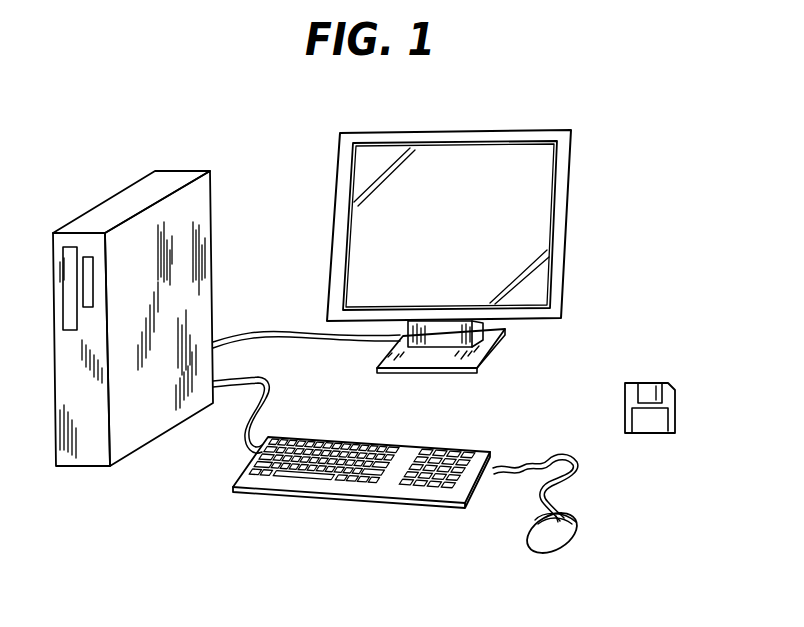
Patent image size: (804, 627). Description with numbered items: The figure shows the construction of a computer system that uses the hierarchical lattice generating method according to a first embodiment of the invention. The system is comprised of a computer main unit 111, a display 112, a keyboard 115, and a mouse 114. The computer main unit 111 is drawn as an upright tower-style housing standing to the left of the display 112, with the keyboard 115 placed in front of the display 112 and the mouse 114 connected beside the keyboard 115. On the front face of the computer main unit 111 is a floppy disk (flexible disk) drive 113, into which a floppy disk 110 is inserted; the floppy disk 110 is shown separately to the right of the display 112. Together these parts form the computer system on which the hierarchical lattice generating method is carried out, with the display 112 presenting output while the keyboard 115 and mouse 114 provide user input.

The floppy disk 110 is at (650, 388).
The computer main unit 111 is at (142, 187).
The display 112 is at (562, 182).
The floppy disk drive 113 is at (88, 280).
The mouse 114 is at (558, 537).
The keyboard 115 is at (400, 497).